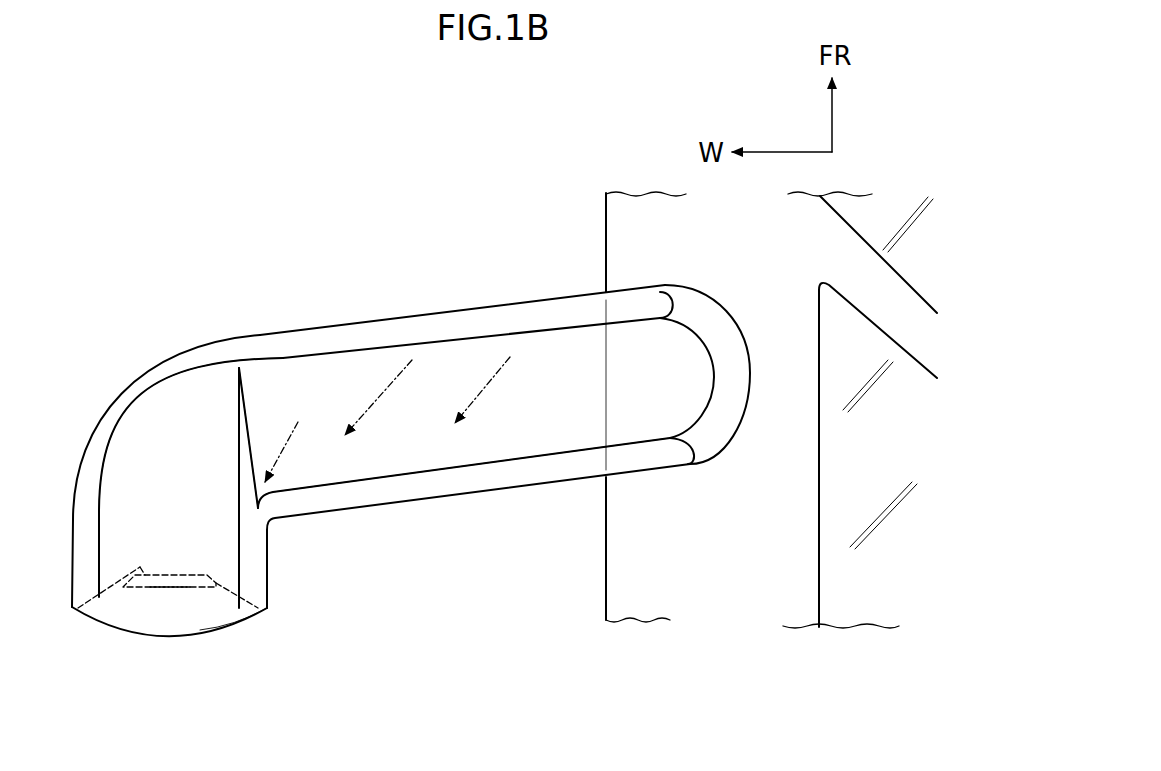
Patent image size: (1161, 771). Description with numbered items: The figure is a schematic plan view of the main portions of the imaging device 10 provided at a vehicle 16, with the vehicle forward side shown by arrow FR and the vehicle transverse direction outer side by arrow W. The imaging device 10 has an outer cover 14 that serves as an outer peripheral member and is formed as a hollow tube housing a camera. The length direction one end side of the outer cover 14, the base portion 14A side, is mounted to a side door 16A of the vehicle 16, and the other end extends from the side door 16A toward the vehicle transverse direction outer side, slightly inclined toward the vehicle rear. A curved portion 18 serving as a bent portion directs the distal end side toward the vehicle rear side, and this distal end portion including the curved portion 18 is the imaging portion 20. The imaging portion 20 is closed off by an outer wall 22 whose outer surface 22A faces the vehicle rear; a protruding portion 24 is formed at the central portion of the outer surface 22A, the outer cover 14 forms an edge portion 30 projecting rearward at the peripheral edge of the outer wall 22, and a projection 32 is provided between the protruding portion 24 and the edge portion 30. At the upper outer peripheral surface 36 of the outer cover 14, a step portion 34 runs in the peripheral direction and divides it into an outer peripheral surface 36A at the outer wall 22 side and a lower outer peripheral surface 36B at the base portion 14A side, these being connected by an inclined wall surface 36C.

The imaging device 10 is at (477, 230).
The outer cover 14 is at (480, 308).
The base portion 14A is at (701, 332).
The vehicle 16 is at (604, 544).
The side door 16A is at (614, 580).
The curved portion 18 is at (175, 386).
The imaging portion 20 is at (171, 486).
The outer wall 22 is at (138, 612).
The outer surface 22A is at (112, 592).
The protruding portion 24 is at (196, 570).
The edge portion 30 is at (230, 626).
The projection 32 is at (170, 587).
The step portion 34 is at (404, 193).
The outer peripheral surface 36 is at (384, 355).
The outer peripheral surface 36A is at (223, 420).
The outer peripheral surface 36B is at (266, 436).
The wall surface 36C is at (252, 440).